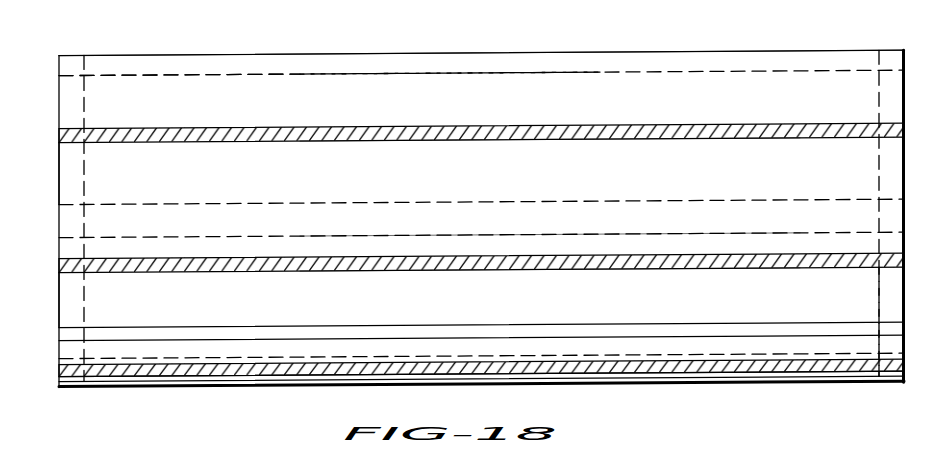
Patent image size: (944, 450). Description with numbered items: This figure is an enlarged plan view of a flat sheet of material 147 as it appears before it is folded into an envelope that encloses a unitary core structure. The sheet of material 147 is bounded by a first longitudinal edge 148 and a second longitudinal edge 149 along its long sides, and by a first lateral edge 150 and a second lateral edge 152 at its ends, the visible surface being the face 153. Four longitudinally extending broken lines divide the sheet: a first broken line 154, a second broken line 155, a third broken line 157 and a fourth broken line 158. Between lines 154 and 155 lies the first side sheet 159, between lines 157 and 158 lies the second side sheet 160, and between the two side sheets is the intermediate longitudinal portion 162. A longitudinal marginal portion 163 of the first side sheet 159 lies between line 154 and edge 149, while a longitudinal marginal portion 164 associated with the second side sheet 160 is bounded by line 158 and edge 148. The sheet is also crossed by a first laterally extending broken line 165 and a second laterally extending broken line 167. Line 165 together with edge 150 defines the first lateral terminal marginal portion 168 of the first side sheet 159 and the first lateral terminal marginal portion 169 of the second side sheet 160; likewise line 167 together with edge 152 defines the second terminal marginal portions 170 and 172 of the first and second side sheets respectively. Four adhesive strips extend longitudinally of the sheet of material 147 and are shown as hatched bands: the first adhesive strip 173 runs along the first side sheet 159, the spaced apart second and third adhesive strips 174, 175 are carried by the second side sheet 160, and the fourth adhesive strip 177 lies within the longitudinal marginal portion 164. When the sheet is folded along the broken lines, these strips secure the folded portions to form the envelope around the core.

The sheet of material 147 is at (729, 384).
The first longitudinal edge 148 is at (206, 380).
The second longitudinal edge 149 is at (383, 55).
The first lateral edge 150 is at (58, 183).
The second lateral edge 152 is at (904, 170).
The face 153 is at (662, 82).
The first broken line 154 is at (457, 74).
The second broken line 155 is at (336, 203).
The third broken line 157 is at (320, 238).
The fourth broken line 158 is at (290, 357).
The first side sheet 159 is at (556, 181).
The second side sheet 160 is at (548, 298).
The intermediate longitudinal portion 162 is at (550, 234).
The longitudinal marginal portion 163 is at (560, 60).
The longitudinal marginal portion 164 is at (600, 382).
The first laterally extending broken line 165 is at (84, 90).
The second laterally extending broken line 167 is at (878, 86).
The first lateral terminal marginal portion 168 is at (72, 106).
The first lateral terminal marginal portion 169 is at (72, 287).
The second terminal marginal portion 170 is at (905, 72).
The second terminal marginal portion 172 is at (890, 302).
The first adhesive strip 173 is at (247, 128).
The second adhesive strip 174 is at (226, 273).
The third adhesive strip 175 is at (238, 328).
The fourth adhesive strip 177 is at (113, 374).